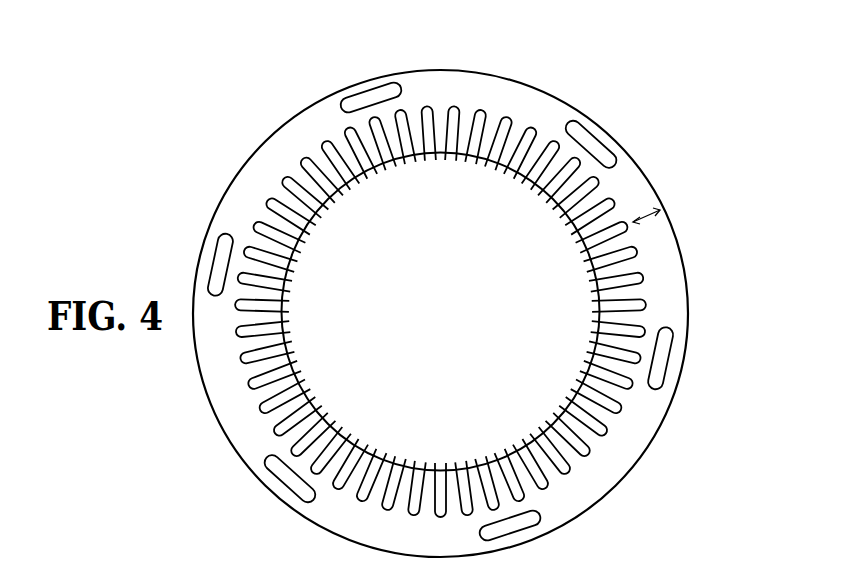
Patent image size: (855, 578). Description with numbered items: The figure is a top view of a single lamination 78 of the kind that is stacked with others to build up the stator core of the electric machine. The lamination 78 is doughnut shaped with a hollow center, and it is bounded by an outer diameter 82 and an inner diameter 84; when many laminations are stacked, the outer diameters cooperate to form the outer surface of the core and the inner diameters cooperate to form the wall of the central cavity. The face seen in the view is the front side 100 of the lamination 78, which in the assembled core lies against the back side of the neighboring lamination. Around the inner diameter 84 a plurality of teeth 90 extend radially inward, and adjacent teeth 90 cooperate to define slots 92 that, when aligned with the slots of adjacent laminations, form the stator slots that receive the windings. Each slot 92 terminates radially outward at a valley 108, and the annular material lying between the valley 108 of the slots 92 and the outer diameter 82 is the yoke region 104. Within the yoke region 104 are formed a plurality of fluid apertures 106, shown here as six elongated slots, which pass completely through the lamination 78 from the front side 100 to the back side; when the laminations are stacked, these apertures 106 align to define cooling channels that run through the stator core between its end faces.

The lamination 78 is at (538, 98).
The outer diameter 82 is at (222, 203).
The inner diameter 84 is at (332, 202).
The teeth 90 is at (375, 155).
The slots 92 is at (406, 132).
The front side 100 is at (292, 128).
The yoke region 104 is at (648, 216).
The fluid apertures 106 is at (603, 137).
The valley 108 is at (636, 226).